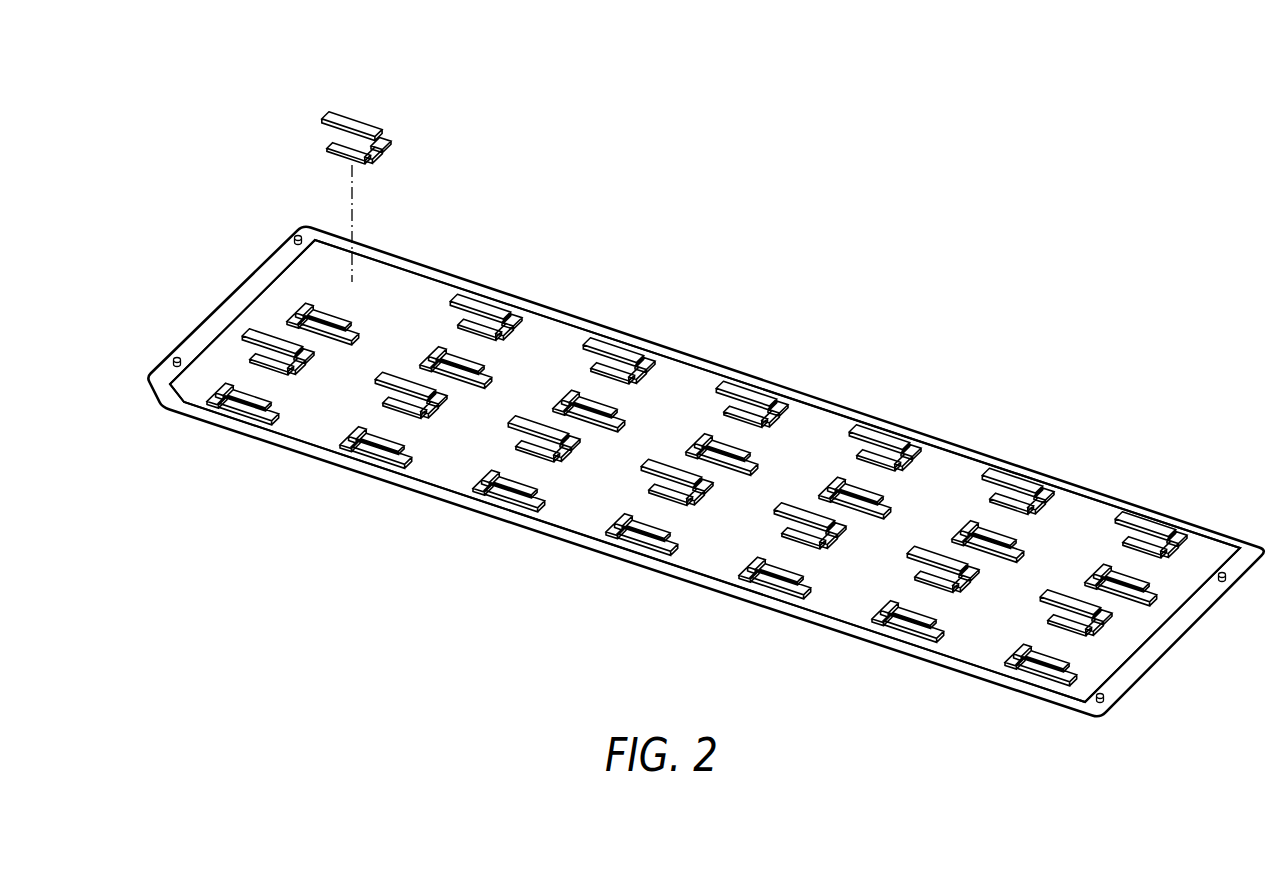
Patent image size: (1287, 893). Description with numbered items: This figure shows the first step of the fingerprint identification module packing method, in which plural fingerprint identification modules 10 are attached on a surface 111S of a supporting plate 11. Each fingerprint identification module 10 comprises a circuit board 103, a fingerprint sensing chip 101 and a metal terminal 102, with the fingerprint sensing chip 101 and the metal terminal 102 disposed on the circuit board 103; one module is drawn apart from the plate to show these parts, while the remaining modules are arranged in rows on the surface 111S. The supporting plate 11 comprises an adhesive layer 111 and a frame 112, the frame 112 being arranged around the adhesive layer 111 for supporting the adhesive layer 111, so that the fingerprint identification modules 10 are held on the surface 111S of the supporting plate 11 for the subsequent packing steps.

The fingerprint identification module 10 is at (697, 354).
The fingerprint sensing chip 101 is at (347, 123).
The metal terminal 102 is at (308, 113).
The circuit board 103 is at (398, 146).
The supporting plate 11 is at (647, 471).
The adhesive layer 111 is at (185, 392).
The surface of the supporting plate 111S is at (690, 380).
The frame 112 is at (203, 332).